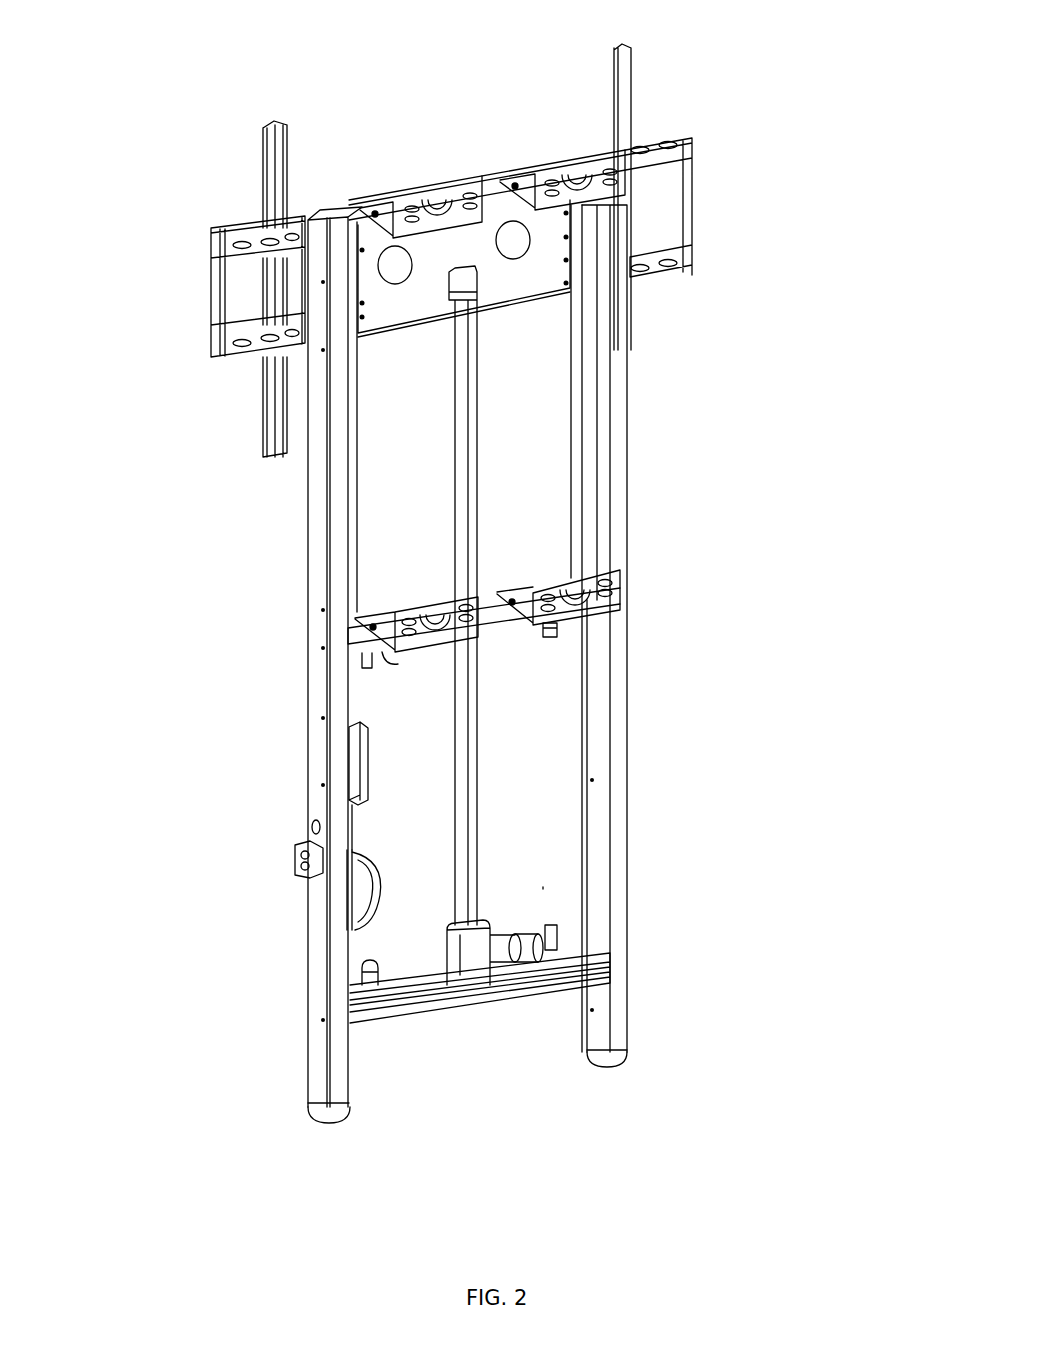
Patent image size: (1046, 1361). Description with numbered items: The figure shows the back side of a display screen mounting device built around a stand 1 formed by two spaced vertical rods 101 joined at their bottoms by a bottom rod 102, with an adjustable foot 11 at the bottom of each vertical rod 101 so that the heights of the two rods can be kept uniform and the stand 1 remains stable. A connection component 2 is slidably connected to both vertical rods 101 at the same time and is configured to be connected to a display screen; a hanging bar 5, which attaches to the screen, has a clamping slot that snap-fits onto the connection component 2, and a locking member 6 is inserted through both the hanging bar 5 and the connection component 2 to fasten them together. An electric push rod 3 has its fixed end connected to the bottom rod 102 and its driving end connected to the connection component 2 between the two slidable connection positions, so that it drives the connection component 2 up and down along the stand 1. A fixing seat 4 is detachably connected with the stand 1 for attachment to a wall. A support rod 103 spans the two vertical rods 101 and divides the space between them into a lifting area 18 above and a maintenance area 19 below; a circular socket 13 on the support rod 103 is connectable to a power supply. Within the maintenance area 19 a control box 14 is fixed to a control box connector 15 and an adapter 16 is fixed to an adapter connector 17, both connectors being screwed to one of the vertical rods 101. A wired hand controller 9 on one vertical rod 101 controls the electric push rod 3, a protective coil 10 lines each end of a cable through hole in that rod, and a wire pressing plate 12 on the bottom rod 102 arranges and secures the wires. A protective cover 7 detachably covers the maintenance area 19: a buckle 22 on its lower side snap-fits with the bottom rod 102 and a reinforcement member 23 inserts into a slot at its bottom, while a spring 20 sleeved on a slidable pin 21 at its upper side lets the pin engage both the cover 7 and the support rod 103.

The stand 1 is at (347, 217).
The connection component 2 is at (491, 210).
The electric push rod 3 is at (462, 487).
The fixing seat 4 is at (537, 172).
The hanging bar 5 is at (263, 147).
The locking member 6 is at (287, 356).
The protective cover 7 is at (590, 797).
The wired hand controller 9 is at (297, 862).
The protective coil 10 is at (315, 826).
The adjustable foot 11 is at (340, 1108).
The wire pressing plate 12 is at (393, 1003).
The circular socket 13 is at (358, 623).
The control box 14 is at (370, 893).
The control box connector 15 is at (352, 868).
The adapter 16 is at (350, 775).
The adapter connector 17 is at (355, 745).
The lifting area 18 is at (525, 400).
The maintenance area 19 is at (543, 887).
The spring 20 is at (593, 605).
The slidable pin 21 is at (547, 632).
The buckle 22 is at (560, 942).
The reinforcement member 23 is at (390, 1000).
The vertical rod 101 is at (620, 722).
The bottom rod 102 is at (560, 980).
The support rod 103 is at (567, 578).